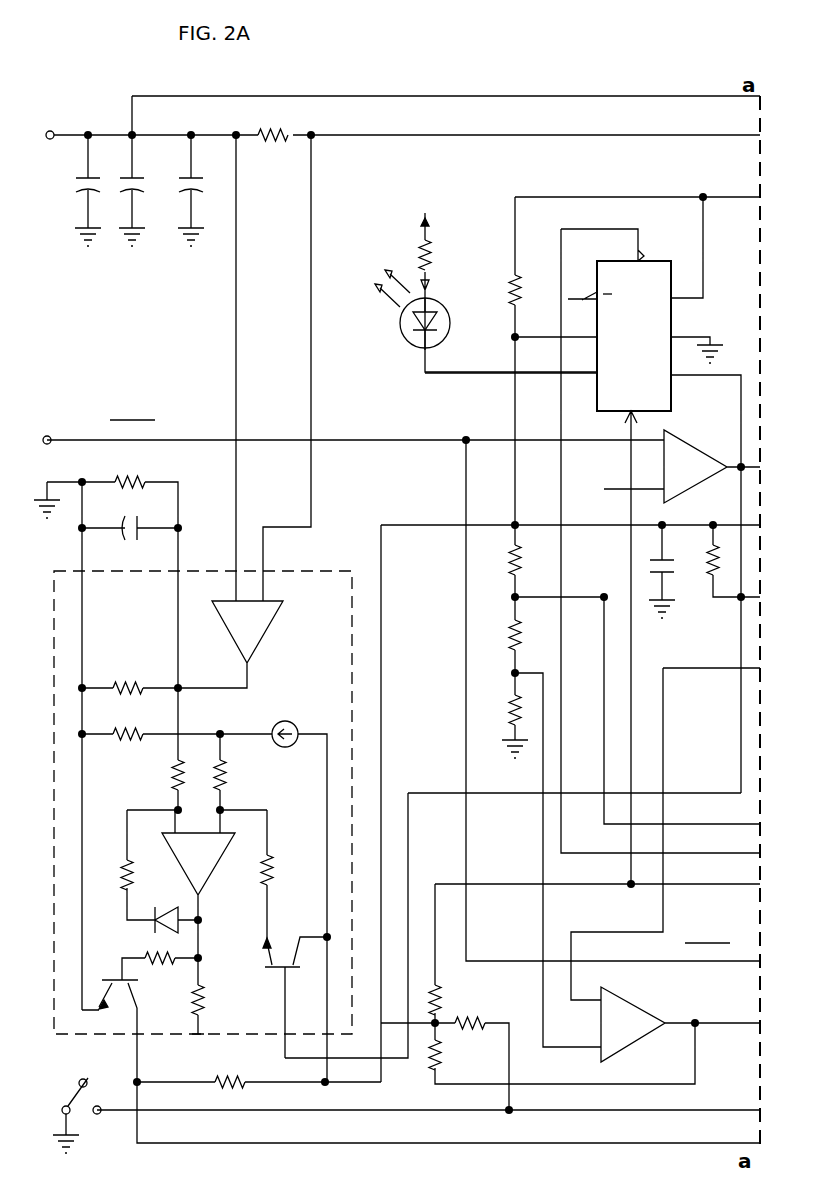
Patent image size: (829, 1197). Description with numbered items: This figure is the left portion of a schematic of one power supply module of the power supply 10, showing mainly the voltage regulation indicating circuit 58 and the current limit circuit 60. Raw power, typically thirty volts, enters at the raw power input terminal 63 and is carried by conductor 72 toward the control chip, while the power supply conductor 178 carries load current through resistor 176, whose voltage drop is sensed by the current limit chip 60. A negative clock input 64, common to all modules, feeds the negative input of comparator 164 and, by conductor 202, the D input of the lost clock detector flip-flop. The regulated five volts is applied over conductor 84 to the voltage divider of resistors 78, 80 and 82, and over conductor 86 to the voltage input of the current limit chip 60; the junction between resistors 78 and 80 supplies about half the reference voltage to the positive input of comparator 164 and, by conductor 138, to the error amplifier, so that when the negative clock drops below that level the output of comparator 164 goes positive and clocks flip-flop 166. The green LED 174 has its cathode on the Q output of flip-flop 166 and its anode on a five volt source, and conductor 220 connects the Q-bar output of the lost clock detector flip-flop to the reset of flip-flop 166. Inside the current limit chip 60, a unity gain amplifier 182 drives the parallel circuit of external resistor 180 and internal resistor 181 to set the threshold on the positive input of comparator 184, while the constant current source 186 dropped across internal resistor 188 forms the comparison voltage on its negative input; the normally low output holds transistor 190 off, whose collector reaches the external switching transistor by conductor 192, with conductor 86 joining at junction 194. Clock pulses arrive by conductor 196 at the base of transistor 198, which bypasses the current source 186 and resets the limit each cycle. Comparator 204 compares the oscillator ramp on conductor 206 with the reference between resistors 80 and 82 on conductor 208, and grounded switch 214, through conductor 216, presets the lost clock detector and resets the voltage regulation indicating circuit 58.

The optical encoder system 10 is at (660, 72).
The voltage regulation indicating circuit 58 is at (523, 72).
The current limit circuit 60 is at (310, 572).
The raw power input terminal 63 is at (51, 130).
The negative clock input 64 is at (48, 436).
The conductor 72 is at (577, 95).
The resistor 78 is at (518, 568).
The resistor 80 is at (520, 642).
The resistor 82 is at (510, 712).
The conductor 84 is at (582, 522).
The conductor 86 is at (383, 638).
The conductor 138 is at (680, 824).
The comparator 164 is at (712, 455).
The flip-flop 166 is at (674, 305).
The green LED 174 is at (445, 312).
The resistor 176 is at (282, 132).
The power supply conductor 178 is at (510, 134).
The resistor 180 is at (135, 480).
The internal resistor 181 is at (128, 685).
The unity gain amplifier 182 is at (270, 627).
The comparator 184 is at (216, 865).
The constant current source 186 is at (286, 722).
The internal resistor 188 is at (128, 740).
The transistor 190 is at (115, 976).
The conductor 192 is at (265, 1143).
The junction 194 is at (139, 1080).
The conductor 196 is at (442, 792).
The transistor 198 is at (264, 970).
The conductor 202 is at (466, 483).
The comparator 204 is at (632, 1003).
The conductor 206 is at (665, 712).
The conductor 208 is at (541, 830).
The switch 214 is at (78, 1086).
The conductor 216 is at (388, 1110).
The conductor 220 is at (559, 748).